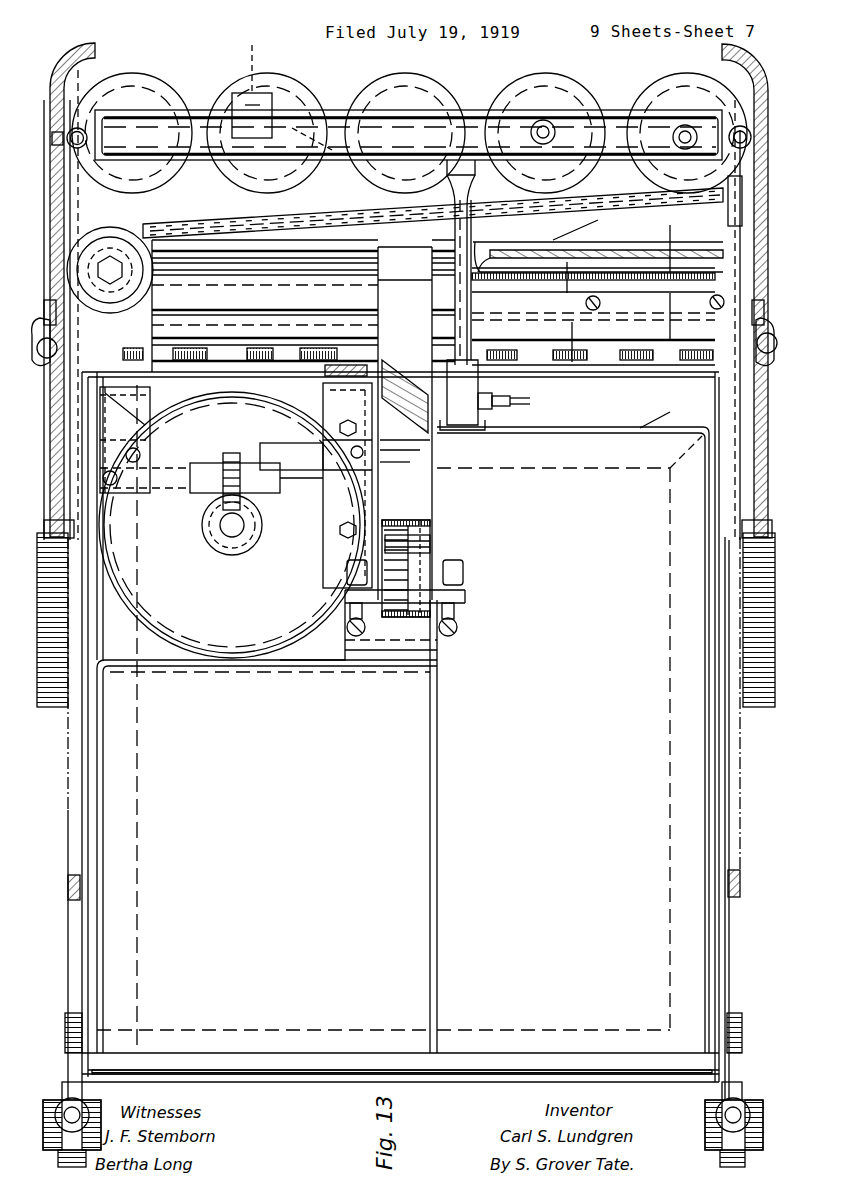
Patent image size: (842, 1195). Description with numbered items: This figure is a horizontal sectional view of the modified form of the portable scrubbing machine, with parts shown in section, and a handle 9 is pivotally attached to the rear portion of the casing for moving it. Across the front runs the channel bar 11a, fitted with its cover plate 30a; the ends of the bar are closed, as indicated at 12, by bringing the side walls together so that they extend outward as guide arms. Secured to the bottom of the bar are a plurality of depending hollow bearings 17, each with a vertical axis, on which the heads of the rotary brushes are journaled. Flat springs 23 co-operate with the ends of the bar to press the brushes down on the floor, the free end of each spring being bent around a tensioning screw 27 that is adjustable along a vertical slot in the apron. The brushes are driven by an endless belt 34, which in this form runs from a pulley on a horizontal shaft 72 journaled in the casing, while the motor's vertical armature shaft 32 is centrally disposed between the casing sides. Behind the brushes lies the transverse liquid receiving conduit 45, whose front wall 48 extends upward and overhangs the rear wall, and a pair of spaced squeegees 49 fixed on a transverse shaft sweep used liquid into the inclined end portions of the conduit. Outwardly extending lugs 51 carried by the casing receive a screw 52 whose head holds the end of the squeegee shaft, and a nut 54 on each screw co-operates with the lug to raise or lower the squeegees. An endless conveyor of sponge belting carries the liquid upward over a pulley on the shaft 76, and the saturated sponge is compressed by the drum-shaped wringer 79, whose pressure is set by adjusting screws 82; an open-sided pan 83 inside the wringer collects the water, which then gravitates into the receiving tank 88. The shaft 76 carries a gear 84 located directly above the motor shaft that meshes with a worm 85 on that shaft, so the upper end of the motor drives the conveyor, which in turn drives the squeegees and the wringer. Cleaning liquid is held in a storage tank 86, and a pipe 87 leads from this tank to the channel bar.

The handle 9 is at (68, 810).
The channel bar 11a is at (338, 108).
The closed ends of bar 12 is at (703, 123).
The depending hollow bearings 17 is at (560, 90).
The flat springs 23 is at (80, 128).
The tensioning screw 27 is at (742, 124).
The cover plate 30a is at (148, 140).
The armature shaft 32 is at (232, 525).
The endless belt 34 is at (238, 218).
The liquid receiving conduit 45 is at (610, 262).
The front wall of conduit 48 is at (478, 360).
The squeegees 49 is at (572, 362).
The lugs 51 is at (280, 665).
The screw 52 is at (43, 360).
The nut 54 is at (40, 322).
The horizontal shaft 72 is at (154, 493).
The shaft 76 is at (296, 500).
The wringer 79 is at (410, 620).
The adjusting screws 82 is at (358, 638).
The open-sided pan 83 is at (420, 548).
The gear 84 is at (195, 520).
The worm 85 is at (222, 548).
The storage tank 86 is at (573, 732).
The pipe 87 is at (474, 168).
The receiving tank 88 is at (267, 712).